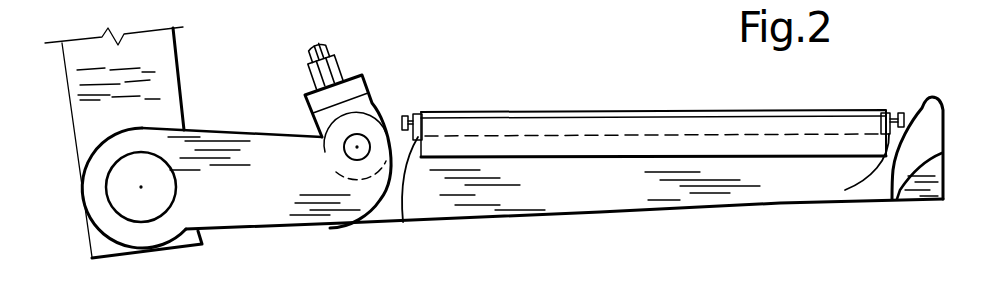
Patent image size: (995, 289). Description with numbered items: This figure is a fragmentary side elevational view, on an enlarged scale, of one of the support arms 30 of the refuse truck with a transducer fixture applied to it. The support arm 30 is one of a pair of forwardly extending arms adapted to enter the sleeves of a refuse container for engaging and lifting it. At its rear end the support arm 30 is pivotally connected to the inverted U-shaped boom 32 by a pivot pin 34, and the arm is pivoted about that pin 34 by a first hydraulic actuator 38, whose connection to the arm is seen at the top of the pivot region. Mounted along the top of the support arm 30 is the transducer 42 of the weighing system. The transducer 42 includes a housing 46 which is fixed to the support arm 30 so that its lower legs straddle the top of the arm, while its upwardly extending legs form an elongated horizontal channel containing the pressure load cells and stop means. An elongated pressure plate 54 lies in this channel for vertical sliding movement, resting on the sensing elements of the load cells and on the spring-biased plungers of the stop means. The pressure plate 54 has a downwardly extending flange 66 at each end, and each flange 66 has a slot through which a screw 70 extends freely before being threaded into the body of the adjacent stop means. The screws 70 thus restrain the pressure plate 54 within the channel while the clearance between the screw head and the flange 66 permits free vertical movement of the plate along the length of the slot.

The support arm 30 is at (872, 183).
The boom 32 is at (158, 70).
The pivot pin 34 is at (163, 200).
The first hydraulic actuator 38 is at (352, 66).
The transducer 42 is at (651, 150).
The housing 46 is at (651, 158).
The pressure plate 54 is at (648, 112).
The flange 66 is at (403, 222).
The screw 70 is at (405, 116).